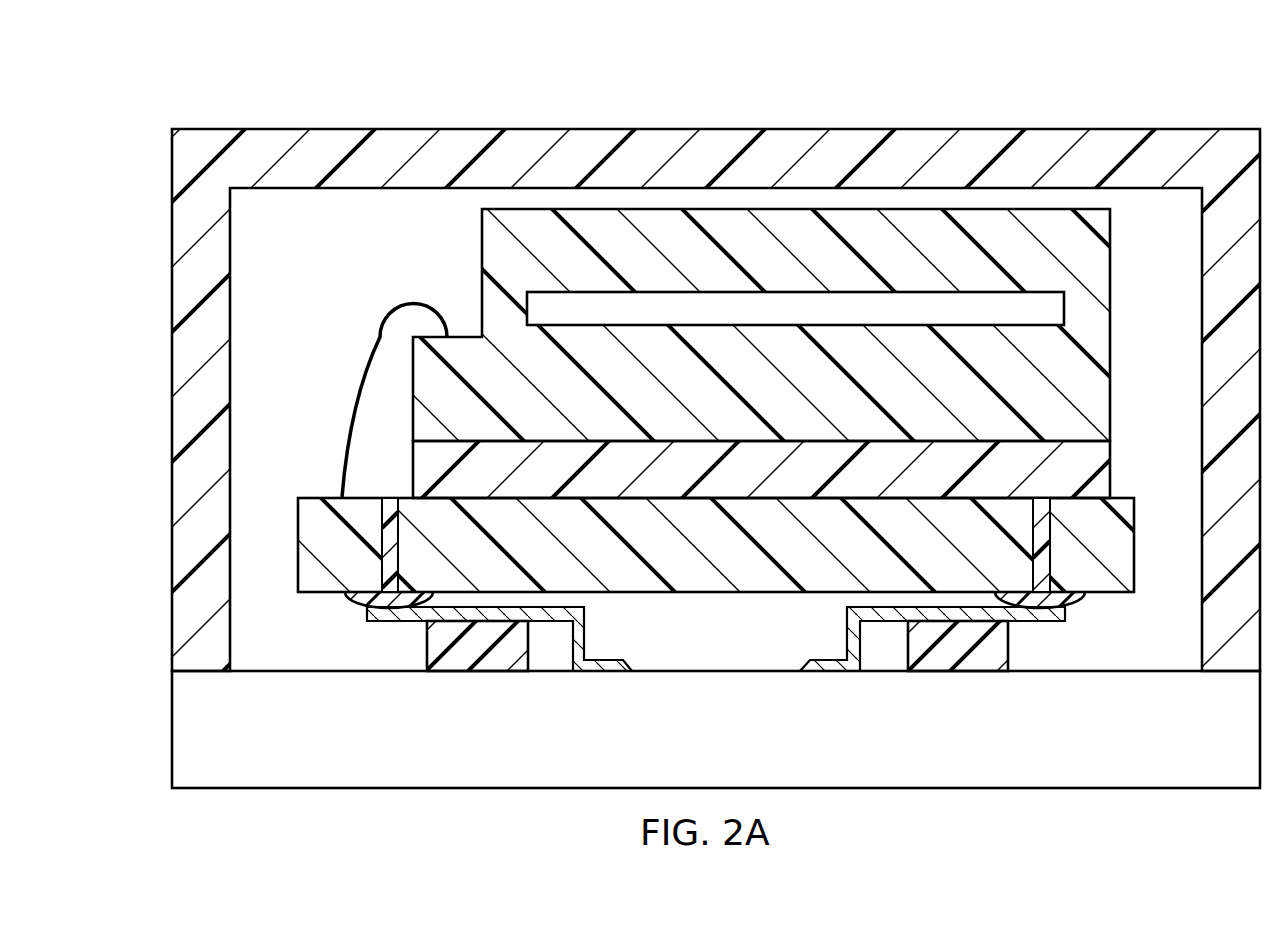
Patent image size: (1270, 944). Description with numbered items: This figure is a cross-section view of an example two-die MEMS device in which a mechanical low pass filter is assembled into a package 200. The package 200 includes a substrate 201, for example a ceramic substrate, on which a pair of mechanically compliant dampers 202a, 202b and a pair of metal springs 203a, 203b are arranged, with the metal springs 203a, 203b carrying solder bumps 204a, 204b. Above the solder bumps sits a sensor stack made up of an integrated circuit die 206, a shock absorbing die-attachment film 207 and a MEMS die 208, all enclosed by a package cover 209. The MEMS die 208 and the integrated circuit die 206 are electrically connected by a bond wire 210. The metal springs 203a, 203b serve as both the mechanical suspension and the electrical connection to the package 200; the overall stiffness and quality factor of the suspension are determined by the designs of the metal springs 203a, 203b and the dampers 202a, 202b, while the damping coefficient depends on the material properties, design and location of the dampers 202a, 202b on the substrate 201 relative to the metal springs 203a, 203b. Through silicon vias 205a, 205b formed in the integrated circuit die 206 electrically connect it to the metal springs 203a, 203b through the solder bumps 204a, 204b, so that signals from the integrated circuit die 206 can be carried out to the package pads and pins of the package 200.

The package 200 is at (716, 433).
The substrate 201 is at (360, 777).
The damper 202a is at (425, 644).
The damper 202b is at (1000, 644).
The metal spring 203a is at (616, 662).
The metal spring 203b is at (822, 662).
The solder bump 204a is at (356, 612).
The solder bump 204b is at (1088, 604).
The through silicon via 205a is at (392, 560).
The through silicon via 205b is at (1040, 530).
The integrated circuit die 206 is at (706, 596).
The shock absorbing die-attachment film 207 is at (818, 452).
The MEMS die 208 is at (487, 243).
The package cover 209 is at (276, 138).
The bond wire 210 is at (368, 353).